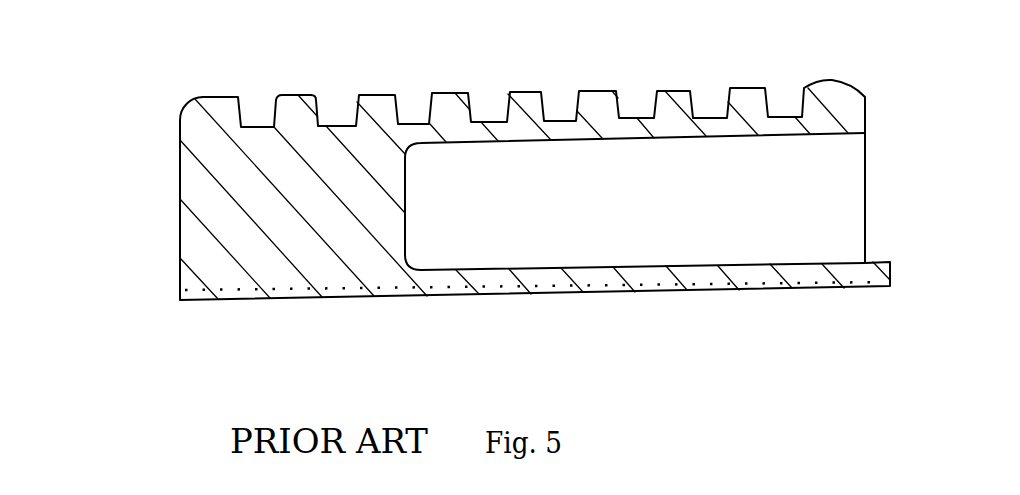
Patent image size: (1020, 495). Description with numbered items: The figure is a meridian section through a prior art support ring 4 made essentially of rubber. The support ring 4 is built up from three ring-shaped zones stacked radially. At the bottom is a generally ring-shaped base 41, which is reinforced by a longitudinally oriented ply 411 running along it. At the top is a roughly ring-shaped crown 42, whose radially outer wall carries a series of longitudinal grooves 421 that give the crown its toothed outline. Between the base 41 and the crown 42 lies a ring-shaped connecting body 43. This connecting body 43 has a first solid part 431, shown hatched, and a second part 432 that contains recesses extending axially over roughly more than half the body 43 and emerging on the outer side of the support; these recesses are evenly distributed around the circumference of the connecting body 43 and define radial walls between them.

The support ring 4 is at (150, 90).
The base 41 is at (623, 277).
The longitudinally oriented ply 411 is at (677, 283).
The crown 42 is at (523, 105).
The longitudinal grooves 421 is at (630, 117).
The connecting body 43 is at (362, 258).
The first solid part 431 is at (255, 207).
The second part 432 is at (688, 210).